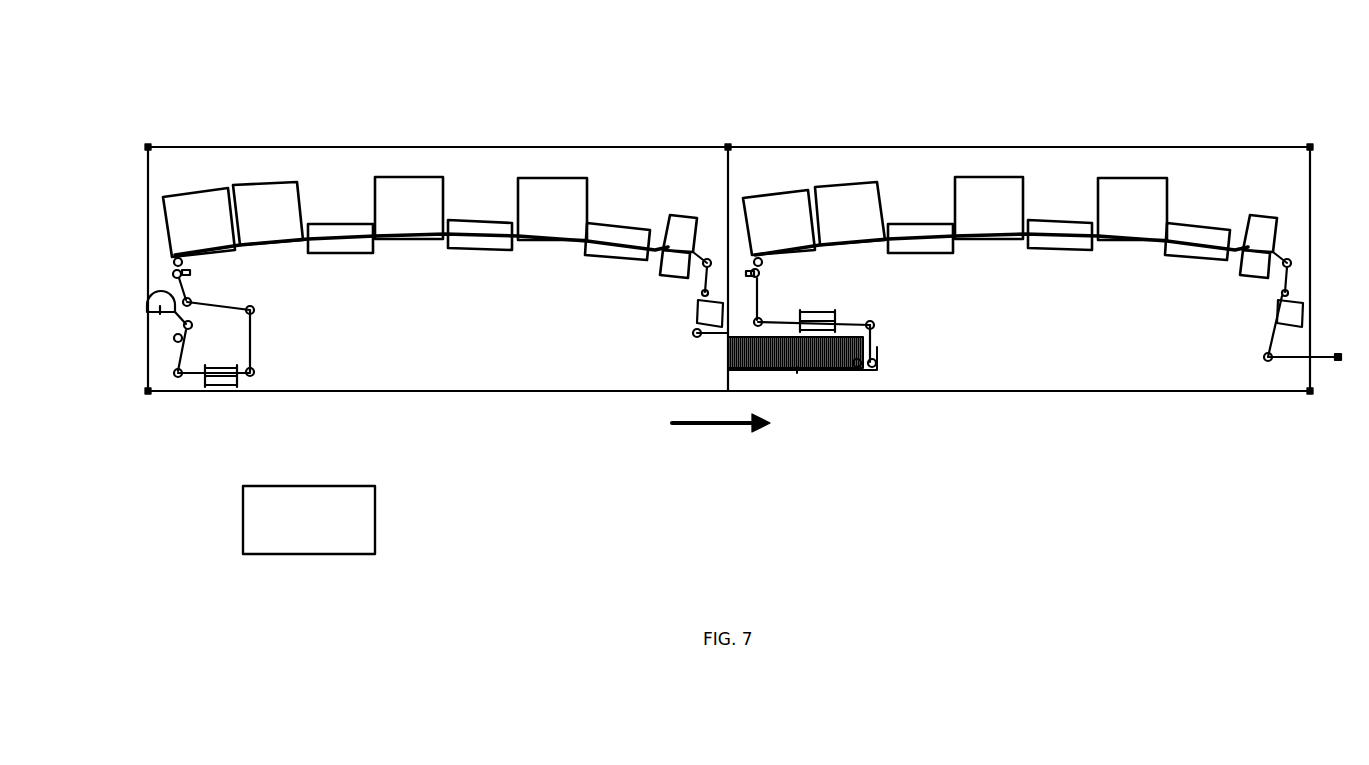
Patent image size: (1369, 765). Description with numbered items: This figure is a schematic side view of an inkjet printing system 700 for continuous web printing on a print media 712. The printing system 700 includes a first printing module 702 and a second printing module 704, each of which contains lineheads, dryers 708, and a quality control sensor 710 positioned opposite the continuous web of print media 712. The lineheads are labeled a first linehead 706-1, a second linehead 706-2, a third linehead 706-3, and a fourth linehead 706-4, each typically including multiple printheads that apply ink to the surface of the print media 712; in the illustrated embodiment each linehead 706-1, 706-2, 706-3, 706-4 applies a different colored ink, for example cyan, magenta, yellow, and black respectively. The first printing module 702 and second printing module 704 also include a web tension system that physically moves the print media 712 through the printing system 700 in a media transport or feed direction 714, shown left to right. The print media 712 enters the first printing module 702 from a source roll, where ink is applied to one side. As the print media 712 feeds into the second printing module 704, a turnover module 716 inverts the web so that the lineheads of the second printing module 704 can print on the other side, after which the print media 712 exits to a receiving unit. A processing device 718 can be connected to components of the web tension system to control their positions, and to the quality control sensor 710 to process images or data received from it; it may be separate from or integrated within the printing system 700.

The printing system 700 is at (635, 88).
The first printing module 702 is at (437, 147).
The second printing module 704 is at (1017, 147).
The first linehead 706-1 is at (193, 217).
The second linehead 706-2 is at (255, 220).
The third linehead 706-3 is at (415, 208).
The fourth linehead 706-4 is at (557, 217).
The dryer 708 is at (353, 247).
The quality control sensor 710 is at (677, 273).
The print media 712 is at (137, 350).
The media transport direction 714 is at (707, 427).
The turnover module 716 is at (880, 350).
The processing device 718 is at (375, 505).